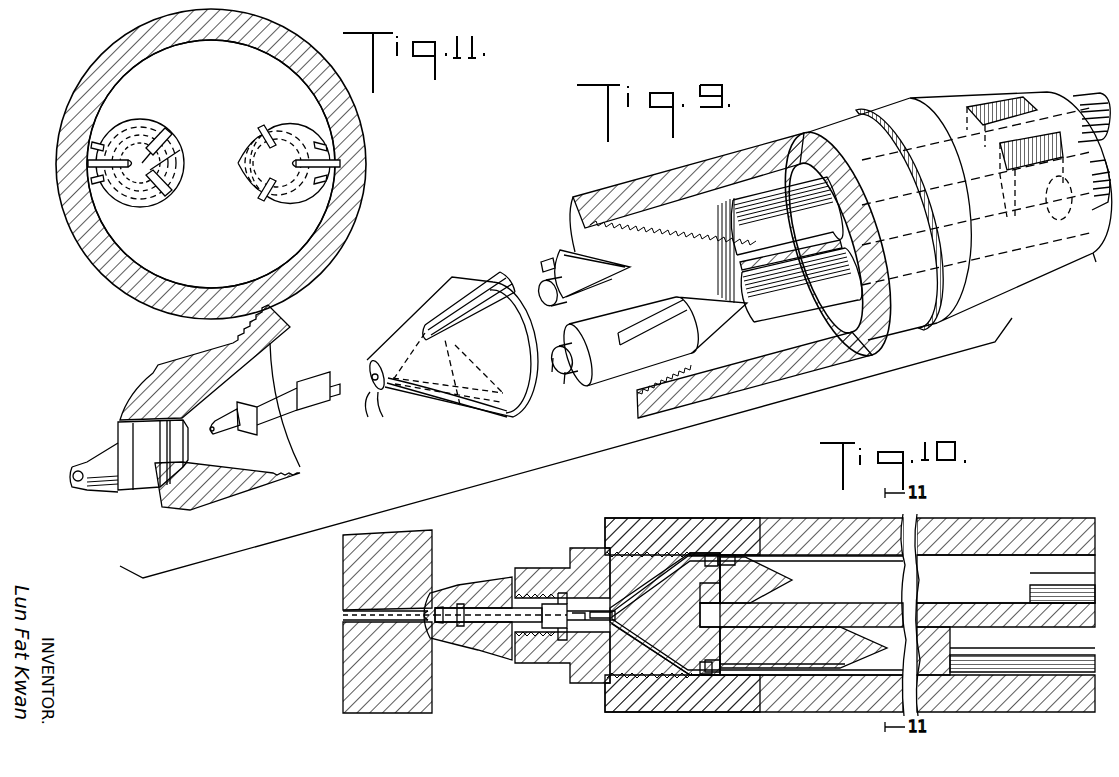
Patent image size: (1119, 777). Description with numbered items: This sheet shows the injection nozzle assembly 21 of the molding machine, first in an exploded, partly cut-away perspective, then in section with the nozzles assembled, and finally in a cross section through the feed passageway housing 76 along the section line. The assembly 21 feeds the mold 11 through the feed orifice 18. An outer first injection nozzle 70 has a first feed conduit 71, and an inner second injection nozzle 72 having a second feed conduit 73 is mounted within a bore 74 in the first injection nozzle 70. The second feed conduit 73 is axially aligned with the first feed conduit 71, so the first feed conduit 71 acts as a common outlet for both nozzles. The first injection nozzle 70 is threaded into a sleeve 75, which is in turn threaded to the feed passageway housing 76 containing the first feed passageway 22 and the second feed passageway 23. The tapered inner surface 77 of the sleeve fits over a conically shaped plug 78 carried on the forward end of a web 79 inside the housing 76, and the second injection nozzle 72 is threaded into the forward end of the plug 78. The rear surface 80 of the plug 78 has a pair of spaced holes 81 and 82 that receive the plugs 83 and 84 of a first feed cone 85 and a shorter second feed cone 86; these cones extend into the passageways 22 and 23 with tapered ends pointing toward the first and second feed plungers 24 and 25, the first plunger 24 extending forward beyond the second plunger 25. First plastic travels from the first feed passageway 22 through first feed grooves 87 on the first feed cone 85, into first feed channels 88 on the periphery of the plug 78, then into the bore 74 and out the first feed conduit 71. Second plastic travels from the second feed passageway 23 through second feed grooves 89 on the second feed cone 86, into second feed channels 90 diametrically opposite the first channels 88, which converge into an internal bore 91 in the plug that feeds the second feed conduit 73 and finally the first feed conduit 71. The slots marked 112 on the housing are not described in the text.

In FIG. 10, the mold 11 is at (420, 565).
In FIG. 11, the feed orifice 18 is at (275, 72).
In FIG. 9, the feed orifice 18 is at (405, 337).
In FIG. 10, the feed orifice 18 is at (363, 617).
In FIG. 10, the injection nozzle assembly 21 is at (530, 675).
In FIG. 9, the first feed passageway 22 is at (816, 292).
In FIG. 10, the first feed passageway 22 is at (937, 660).
In FIG. 9, the second feed passageway 23 is at (772, 180).
In FIG. 10, the second feed passageway 23 is at (975, 570).
In FIG. 9, the first feed plunger 24 is at (1096, 212).
In FIG. 10, the first feed plunger 24 is at (1015, 660).
In FIG. 9, the second feed plunger 25 is at (1090, 100).
In FIG. 10, the second feed plunger 25 is at (1052, 565).
In FIG. 9, the first injection nozzle 70 is at (90, 455).
In FIG. 10, the first injection nozzle 70 is at (470, 586).
In FIG. 9, the first feed conduit 71 is at (68, 465).
In FIG. 10, the first feed conduit 71 is at (438, 600).
In FIG. 9, the second injection nozzle 72 is at (292, 395).
In FIG. 10, the second injection nozzle 72 is at (515, 600).
In FIG. 9, the second feed conduit 73 is at (217, 433).
In FIG. 10, the second feed conduit 73 is at (462, 640).
In FIG. 10, the bore 74 is at (495, 645).
In FIG. 9, the sleeve 75 is at (188, 370).
In FIG. 10, the sleeve 75 is at (575, 546).
In FIG. 11, the feed passageway housing 76 is at (352, 218).
In FIG. 9, the feed passageway housing 76 is at (633, 184).
In FIG. 10, the feed passageway housing 76 is at (945, 536).
In FIG. 9, the inner surface 77 is at (292, 338).
In FIG. 10, the inner surface 77 is at (615, 548).
In FIG. 10, the plug 78 is at (710, 560).
In FIG. 9, the web 79 is at (808, 246).
In FIG. 10, the web 79 is at (820, 607).
In FIG. 11, the rear surface 80 is at (148, 247).
In FIG. 10, the rear surface 80 is at (665, 614).
In FIG. 10, the hole 81 is at (715, 672).
In FIG. 10, the hole 82 is at (720, 557).
In FIG. 9, the plug of first feed cone 83 is at (563, 384).
In FIG. 10, the plug of first feed cone 83 is at (702, 676).
In FIG. 9, the plug of second feed cone 84 is at (535, 280).
In FIG. 10, the plug of second feed cone 84 is at (704, 588).
In FIG. 11, the first feed cone 85 is at (253, 172).
In FIG. 9, the first feed cone 85 is at (645, 310).
In FIG. 10, the first feed cone 85 is at (800, 668).
In FIG. 11, the second feed cone 86 is at (150, 120).
In FIG. 9, the second feed cone 86 is at (607, 268).
In FIG. 10, the second feed cone 86 is at (755, 575).
In FIG. 11, the first feed grooves 87 is at (290, 150).
In FIG. 9, the first feed grooves 87 is at (680, 310).
In FIG. 10, the first feed grooves 87 is at (795, 665).
In FIG. 11, the first feed channels 88 is at (337, 188).
In FIG. 9, the first feed channels 88 is at (376, 410).
In FIG. 10, the first feed channels 88 is at (650, 670).
In FIG. 11, the second feed grooves 89 is at (160, 163).
In FIG. 9, the second feed grooves 89 is at (548, 258).
In FIG. 10, the second feed grooves 89 is at (730, 560).
In FIG. 11, the second feed channels 90 is at (88, 180).
In FIG. 9, the second feed channels 90 is at (470, 302).
In FIG. 10, the second feed channels 90 is at (688, 553).
In FIG. 9, the internal bore 91 is at (373, 363).
In FIG. 10, the internal bore 91 is at (618, 619).
In FIG. 9, the slot 112 is at (1030, 137).